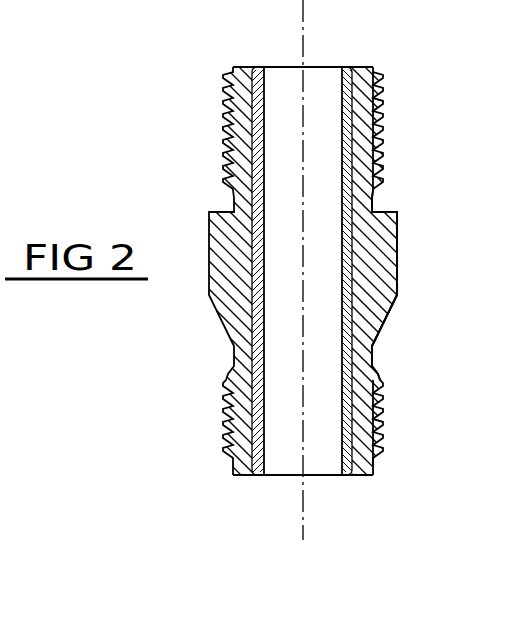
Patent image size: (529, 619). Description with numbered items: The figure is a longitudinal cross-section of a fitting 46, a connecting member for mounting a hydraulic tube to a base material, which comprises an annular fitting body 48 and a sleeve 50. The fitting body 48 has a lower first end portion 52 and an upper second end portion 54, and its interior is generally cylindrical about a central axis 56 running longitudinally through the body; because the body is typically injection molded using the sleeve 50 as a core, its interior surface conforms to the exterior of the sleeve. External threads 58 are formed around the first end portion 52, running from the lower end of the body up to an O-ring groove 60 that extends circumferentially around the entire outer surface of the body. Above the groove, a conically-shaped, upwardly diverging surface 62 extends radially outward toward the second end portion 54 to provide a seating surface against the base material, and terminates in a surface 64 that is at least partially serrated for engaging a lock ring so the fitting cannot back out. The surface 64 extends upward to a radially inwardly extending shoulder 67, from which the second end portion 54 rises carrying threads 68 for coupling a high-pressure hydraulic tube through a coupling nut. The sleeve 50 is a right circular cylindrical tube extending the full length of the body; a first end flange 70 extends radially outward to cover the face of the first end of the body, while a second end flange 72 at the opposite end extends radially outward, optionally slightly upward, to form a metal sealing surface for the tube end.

The fitting 46 is at (424, 157).
The fitting body 48 is at (375, 247).
The sleeve 50 is at (345, 477).
The first end portion 52 is at (394, 447).
The second end portion 54 is at (392, 96).
The central axis 56 is at (303, 530).
The external threads 58 is at (378, 432).
The O-ring groove 60 is at (373, 371).
The conically-shaped surface 62 is at (392, 313).
The serrated surface 64 is at (398, 265).
The shoulder 67 is at (398, 211).
The threads 68 is at (383, 122).
The first end flange 70 is at (255, 476).
The second end flange 72 is at (250, 67).